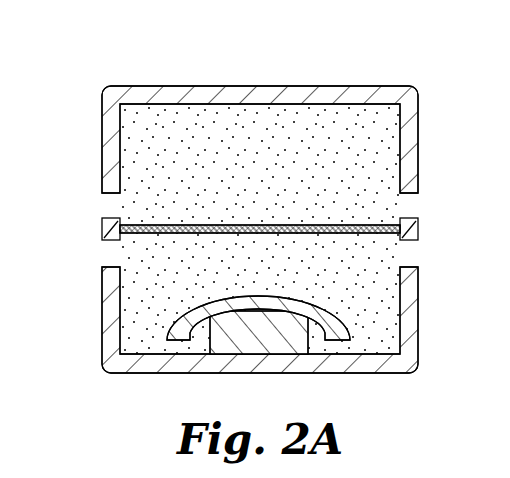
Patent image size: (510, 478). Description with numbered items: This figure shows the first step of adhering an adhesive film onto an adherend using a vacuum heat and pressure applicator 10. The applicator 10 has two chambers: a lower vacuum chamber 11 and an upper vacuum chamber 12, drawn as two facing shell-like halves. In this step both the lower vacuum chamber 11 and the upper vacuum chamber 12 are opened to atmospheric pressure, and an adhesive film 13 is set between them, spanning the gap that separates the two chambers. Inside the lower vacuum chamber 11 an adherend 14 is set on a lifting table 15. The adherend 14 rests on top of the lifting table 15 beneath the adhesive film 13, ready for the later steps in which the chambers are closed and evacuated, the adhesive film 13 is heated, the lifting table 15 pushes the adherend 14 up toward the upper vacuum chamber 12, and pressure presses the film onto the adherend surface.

The vacuum heat and pressure applicator 10 is at (231, 214).
The lower vacuum chamber 11 is at (133, 305).
The upper vacuum chamber 12 is at (134, 141).
The adhesive film 13 is at (156, 226).
The adherend 14 is at (341, 333).
The lifting table 15 is at (286, 341).